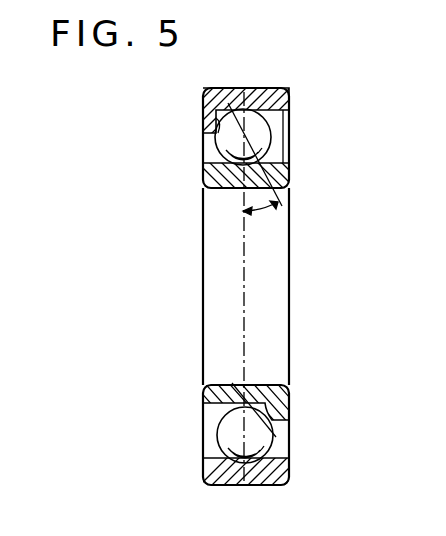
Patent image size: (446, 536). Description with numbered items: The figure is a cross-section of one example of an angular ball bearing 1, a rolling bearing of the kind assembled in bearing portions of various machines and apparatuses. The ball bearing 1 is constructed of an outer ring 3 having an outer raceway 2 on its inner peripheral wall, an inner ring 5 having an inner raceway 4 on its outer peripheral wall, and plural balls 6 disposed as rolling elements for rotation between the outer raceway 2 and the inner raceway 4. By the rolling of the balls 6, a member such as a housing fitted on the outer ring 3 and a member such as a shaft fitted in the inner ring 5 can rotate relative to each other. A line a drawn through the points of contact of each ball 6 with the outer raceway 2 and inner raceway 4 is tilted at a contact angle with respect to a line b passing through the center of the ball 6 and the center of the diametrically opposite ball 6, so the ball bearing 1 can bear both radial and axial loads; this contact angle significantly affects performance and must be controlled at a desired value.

The angular ball bearing 1 is at (290, 168).
The outer raceway 2 is at (222, 128).
The outer ring 3 is at (265, 97).
The inner raceway 4 is at (280, 432).
The inner ring 5 is at (282, 398).
The ball 6 is at (272, 128).
The line through points of contact a is at (237, 147).
The line through ball centers b is at (245, 301).